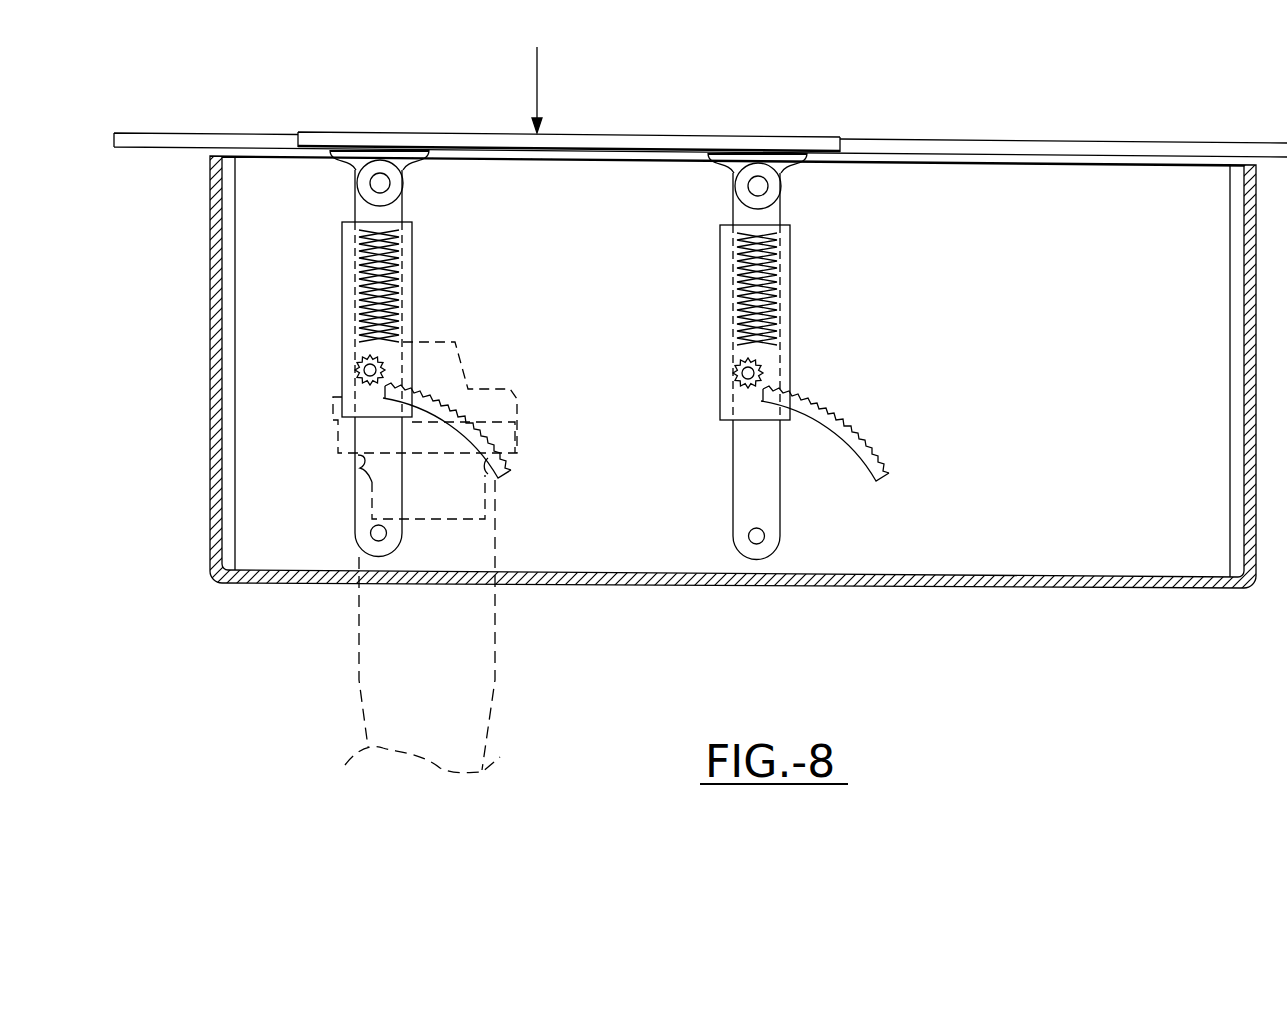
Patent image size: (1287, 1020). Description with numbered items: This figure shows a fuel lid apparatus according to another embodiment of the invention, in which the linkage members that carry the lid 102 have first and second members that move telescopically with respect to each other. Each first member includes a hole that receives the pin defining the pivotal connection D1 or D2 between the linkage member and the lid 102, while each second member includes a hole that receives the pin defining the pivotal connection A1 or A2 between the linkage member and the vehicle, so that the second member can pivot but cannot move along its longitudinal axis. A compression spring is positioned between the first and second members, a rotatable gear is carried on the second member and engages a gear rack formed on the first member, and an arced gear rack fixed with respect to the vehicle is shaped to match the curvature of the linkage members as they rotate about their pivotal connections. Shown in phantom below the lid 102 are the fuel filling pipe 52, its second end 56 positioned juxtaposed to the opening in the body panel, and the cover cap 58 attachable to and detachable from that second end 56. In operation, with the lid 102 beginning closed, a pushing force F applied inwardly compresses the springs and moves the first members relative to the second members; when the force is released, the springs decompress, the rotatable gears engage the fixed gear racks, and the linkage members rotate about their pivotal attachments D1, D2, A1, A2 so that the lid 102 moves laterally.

The lid 102 is at (549, 134).
The cover cap 58 is at (498, 388).
The second end 56 is at (497, 516).
The fuel filling pipe 52 is at (375, 697).
The pushing force F is at (536, 78).
The pivotal attachment D1 is at (748, 138).
The pivotal attachment D2 is at (380, 183).
The pivotal attachment A1 is at (378, 533).
The pivotal attachment A2 is at (715, 540).